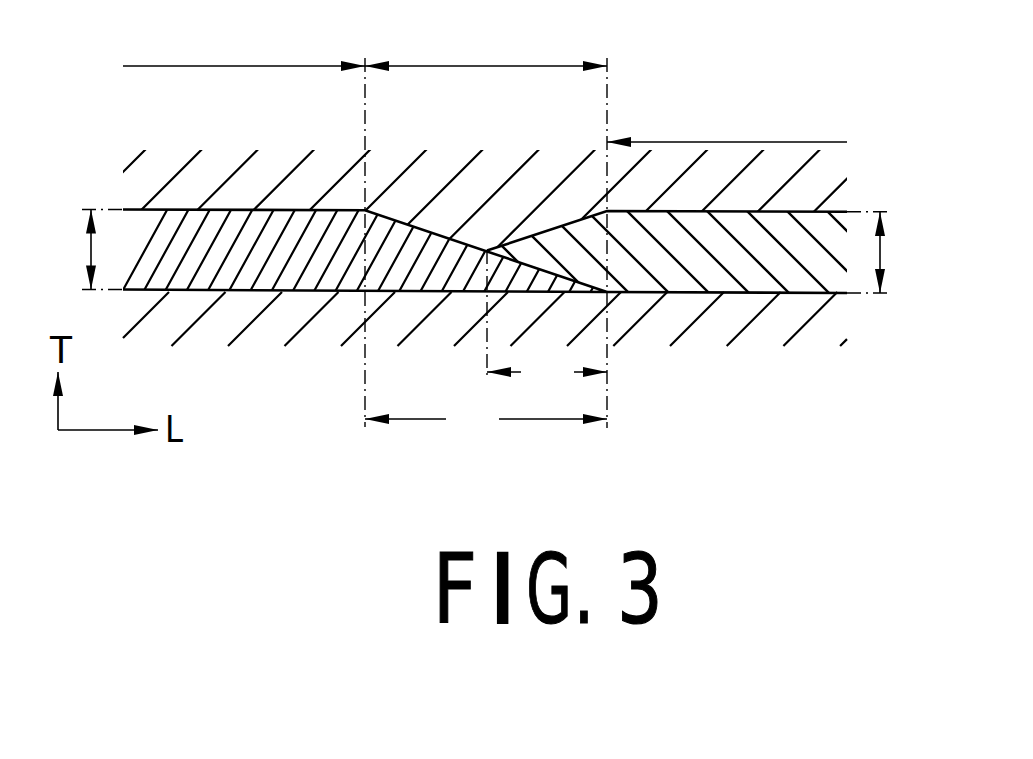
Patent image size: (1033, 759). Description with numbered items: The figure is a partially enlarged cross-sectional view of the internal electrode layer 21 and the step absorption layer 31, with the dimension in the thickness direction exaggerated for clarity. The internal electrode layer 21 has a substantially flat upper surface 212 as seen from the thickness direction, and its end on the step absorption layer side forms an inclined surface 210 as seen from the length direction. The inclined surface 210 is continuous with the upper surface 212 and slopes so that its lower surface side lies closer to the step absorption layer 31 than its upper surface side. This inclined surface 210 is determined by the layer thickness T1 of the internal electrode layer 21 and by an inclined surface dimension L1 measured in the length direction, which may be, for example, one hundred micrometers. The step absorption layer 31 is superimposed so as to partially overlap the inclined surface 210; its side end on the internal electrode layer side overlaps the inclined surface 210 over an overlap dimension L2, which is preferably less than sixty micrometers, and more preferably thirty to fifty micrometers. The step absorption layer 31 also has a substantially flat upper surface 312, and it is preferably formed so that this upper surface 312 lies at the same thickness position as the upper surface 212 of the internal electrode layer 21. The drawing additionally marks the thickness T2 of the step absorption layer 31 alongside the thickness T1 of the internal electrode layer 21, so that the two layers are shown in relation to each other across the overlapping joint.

The internal electrode layer 21 is at (250, 276).
The step absorption layer 31 is at (750, 278).
The upper surface 212 is at (237, 66).
The inclined surface 210 is at (480, 66).
The upper surface 312 is at (743, 142).
The layer thickness T1 is at (91, 250).
The thickness of second layer T2 is at (880, 253).
The inclined surface dimension L1 is at (486, 424).
The overlap dimension L2 is at (547, 377).